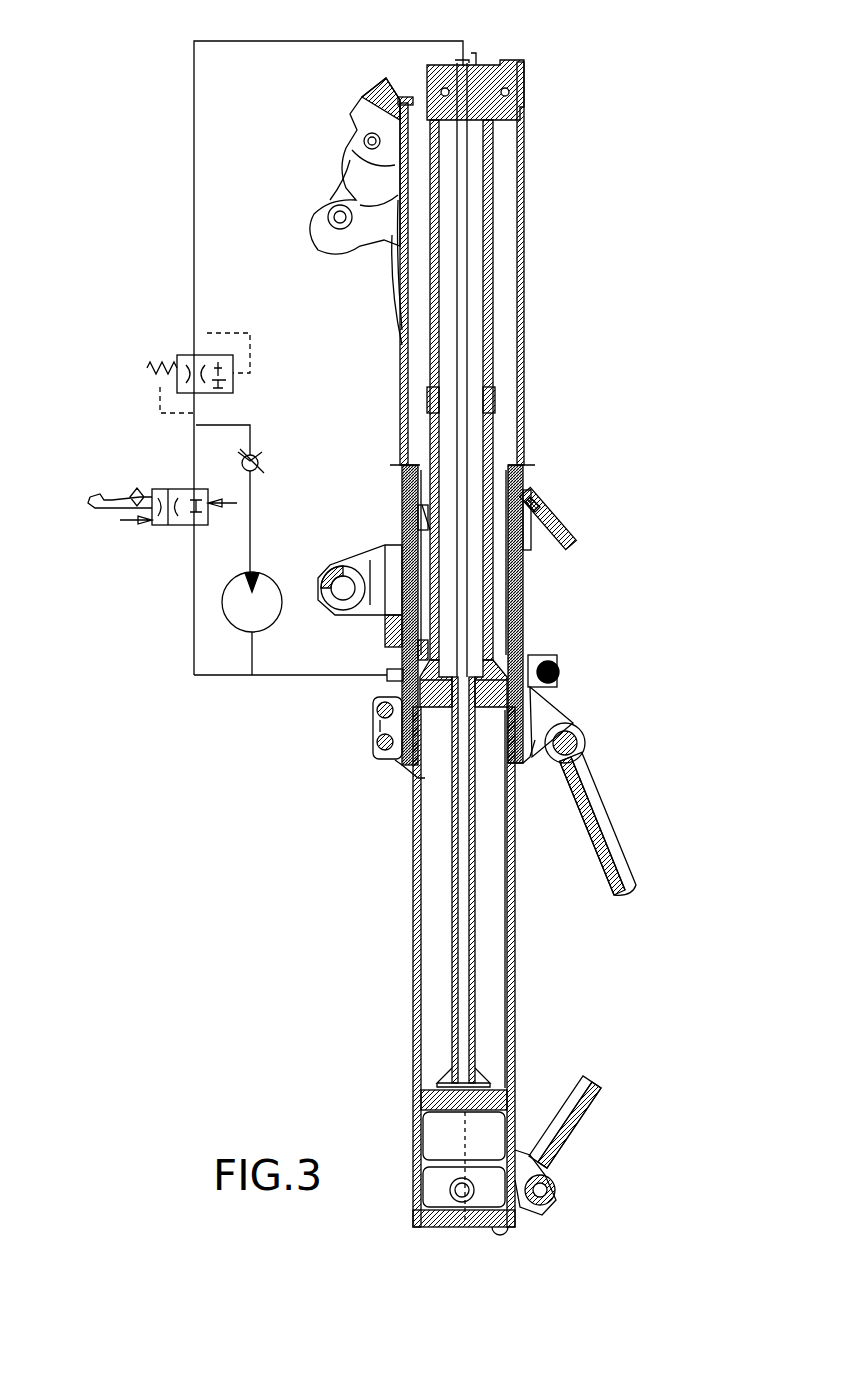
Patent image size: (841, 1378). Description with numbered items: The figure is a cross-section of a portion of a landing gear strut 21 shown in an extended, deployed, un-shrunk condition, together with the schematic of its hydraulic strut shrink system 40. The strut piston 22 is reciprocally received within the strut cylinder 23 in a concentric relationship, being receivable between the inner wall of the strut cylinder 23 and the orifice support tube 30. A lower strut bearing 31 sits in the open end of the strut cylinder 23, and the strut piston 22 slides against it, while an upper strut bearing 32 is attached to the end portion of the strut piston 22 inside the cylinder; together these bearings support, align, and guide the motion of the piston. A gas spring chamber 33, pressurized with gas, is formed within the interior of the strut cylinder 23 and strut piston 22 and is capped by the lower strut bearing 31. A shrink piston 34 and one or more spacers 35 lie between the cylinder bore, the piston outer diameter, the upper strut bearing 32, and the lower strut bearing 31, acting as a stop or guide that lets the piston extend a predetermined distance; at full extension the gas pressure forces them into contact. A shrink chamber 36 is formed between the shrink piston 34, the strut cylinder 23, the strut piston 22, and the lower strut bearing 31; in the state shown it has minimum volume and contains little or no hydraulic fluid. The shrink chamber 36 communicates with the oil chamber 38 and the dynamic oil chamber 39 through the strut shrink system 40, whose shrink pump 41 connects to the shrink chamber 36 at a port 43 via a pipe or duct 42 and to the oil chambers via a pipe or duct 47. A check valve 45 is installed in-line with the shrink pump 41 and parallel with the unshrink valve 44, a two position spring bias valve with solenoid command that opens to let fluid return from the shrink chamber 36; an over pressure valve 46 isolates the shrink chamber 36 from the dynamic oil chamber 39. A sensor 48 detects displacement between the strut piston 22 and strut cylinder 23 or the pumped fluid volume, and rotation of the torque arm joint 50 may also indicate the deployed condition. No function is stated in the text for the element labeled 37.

The strut 21 is at (352, 402).
The strut piston 22 is at (413, 905).
The strut cylinder 23 is at (533, 465).
The orifice support tube 30 is at (540, 553).
The lower strut bearing 31 is at (397, 767).
The upper strut bearing 32 is at (405, 465).
The gas spring chamber 33 is at (405, 520).
The shrink piston 34 is at (395, 652).
The spacers 35 is at (322, 595).
The shrink chamber 36 is at (532, 653).
The bracket 37 is at (395, 627).
The oil chamber 38 is at (512, 293).
The dynamic oil chamber 39 is at (498, 987).
The strut shrink system 40 is at (125, 607).
The shrink pump 41 is at (240, 622).
The pipe or duct 42 is at (270, 675).
The port 43 is at (395, 677).
The unshrink valve 44 is at (162, 487).
The check valve 45 is at (260, 453).
The over pressure valve 46 is at (153, 362).
The pipe or duct 47 is at (345, 41).
The sensor 48 is at (587, 730).
The torque arm joint 50 is at (587, 750).